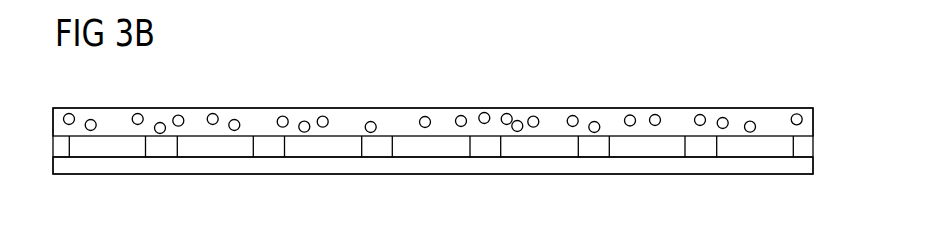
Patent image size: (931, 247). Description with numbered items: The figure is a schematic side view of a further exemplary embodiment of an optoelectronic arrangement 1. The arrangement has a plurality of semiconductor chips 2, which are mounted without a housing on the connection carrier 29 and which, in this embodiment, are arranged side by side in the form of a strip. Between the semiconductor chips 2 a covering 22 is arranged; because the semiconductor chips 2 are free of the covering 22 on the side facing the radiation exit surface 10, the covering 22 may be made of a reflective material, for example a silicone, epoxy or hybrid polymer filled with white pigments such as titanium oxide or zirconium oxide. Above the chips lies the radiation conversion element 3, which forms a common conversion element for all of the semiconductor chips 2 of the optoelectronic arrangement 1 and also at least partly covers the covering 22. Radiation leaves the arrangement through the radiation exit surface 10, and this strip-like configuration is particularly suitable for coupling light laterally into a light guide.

The optoelectronic arrangement 1 is at (763, 97).
The semiconductor chips 2 is at (188, 150).
The radiation conversion element 3 is at (736, 117).
The radiation exit surface 10 is at (400, 108).
The covering 22 is at (270, 150).
The connection carrier 29 is at (767, 167).